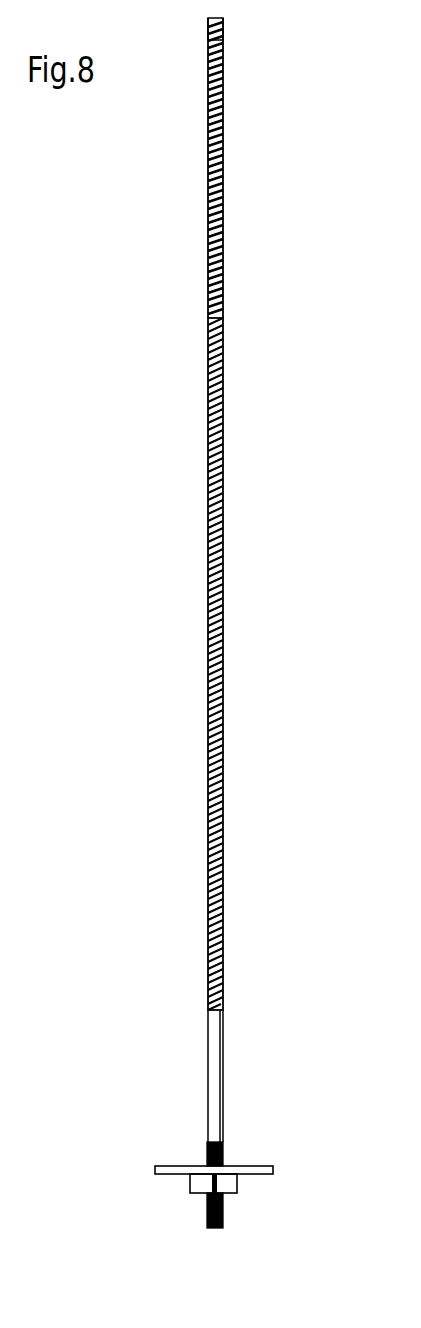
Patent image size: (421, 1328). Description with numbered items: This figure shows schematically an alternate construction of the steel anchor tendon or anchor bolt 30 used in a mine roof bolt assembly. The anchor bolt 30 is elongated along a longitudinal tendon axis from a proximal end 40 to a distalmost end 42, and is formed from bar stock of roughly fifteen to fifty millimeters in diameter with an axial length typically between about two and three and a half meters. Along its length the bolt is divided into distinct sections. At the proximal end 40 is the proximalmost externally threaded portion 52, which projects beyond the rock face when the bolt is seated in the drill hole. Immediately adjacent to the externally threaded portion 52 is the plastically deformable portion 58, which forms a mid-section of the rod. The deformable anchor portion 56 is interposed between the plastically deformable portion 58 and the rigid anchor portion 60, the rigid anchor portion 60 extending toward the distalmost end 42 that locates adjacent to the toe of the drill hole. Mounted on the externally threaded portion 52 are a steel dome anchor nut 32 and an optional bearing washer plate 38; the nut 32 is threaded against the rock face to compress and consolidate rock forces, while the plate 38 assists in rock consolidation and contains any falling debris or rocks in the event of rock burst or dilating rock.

The anchor bolt 30 is at (235, 353).
The distalmost end 42 is at (216, 19).
The rigid anchor portion 60 is at (142, 18).
The deformable anchor portion 56 is at (142, 1012).
The plastically deformable portion 58 is at (142, 1014).
The externally threaded portion 52 is at (229, 1146).
The bearing washer plate 38 is at (165, 1176).
The dome anchor nut 32 is at (230, 1185).
The proximal end 40 is at (210, 1230).